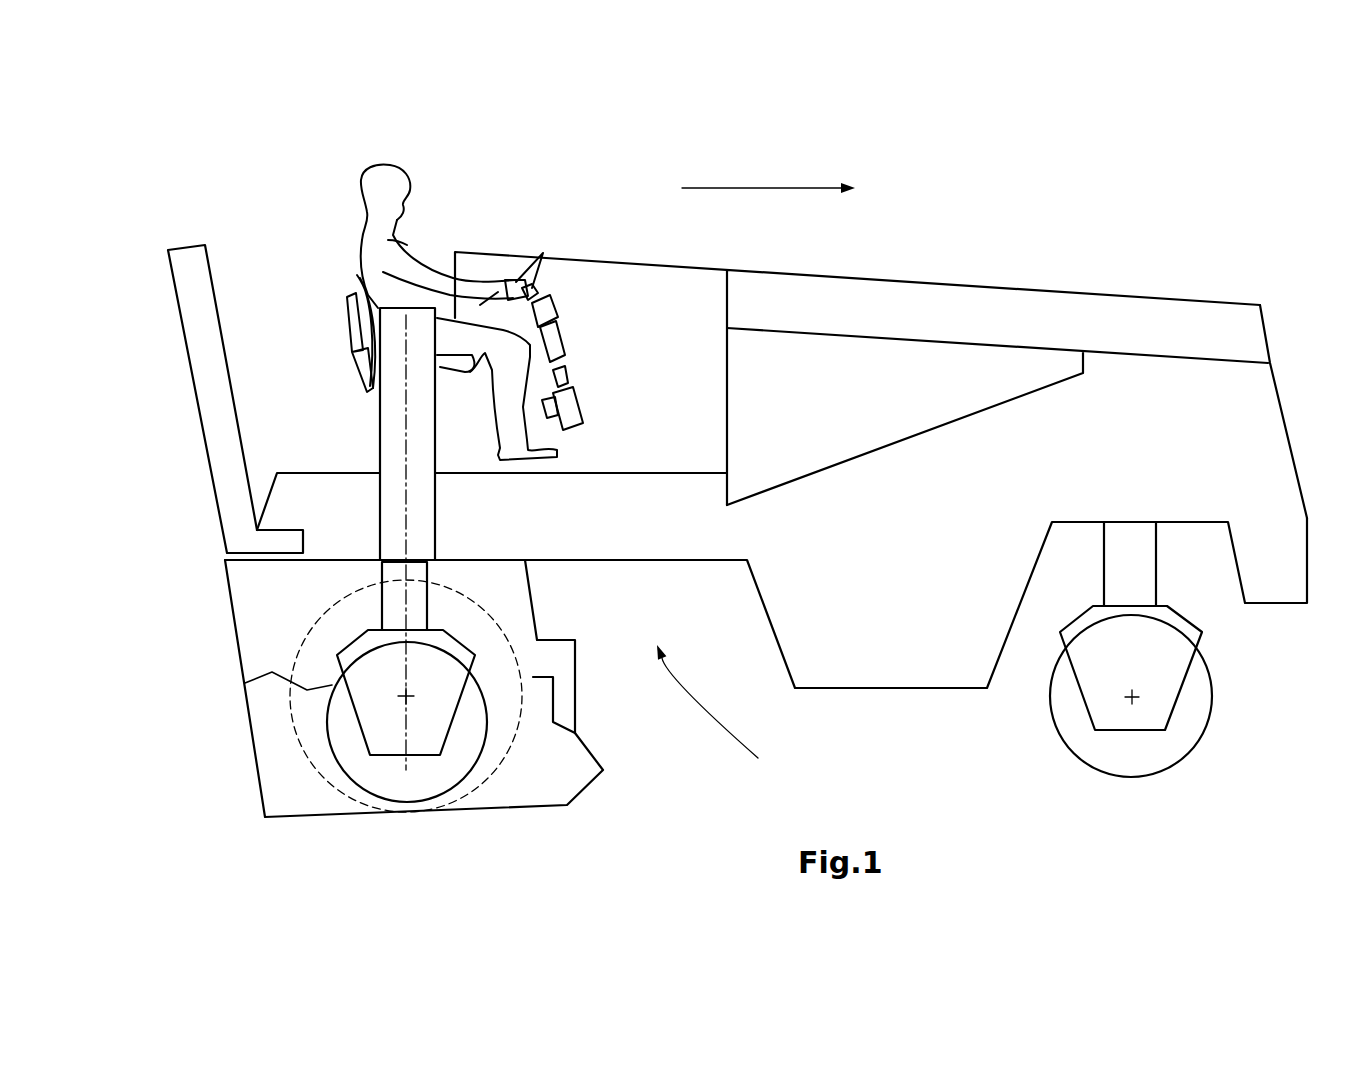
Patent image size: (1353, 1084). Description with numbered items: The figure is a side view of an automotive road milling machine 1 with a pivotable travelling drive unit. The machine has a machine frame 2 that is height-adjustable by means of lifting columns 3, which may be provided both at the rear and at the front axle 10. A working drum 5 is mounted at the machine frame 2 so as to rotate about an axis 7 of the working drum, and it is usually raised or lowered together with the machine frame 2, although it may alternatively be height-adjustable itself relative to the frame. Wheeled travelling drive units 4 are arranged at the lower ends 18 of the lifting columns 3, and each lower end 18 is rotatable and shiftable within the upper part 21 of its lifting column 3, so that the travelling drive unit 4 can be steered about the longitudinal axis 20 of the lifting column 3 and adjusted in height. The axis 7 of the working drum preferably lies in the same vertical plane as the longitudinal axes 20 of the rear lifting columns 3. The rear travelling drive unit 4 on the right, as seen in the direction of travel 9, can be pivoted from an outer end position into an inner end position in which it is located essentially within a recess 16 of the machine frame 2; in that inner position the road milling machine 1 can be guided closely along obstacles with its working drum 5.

The road milling machine 1 is at (290, 196).
The machine frame 2 is at (1177, 430).
The lifting column 3 is at (429, 450).
The travelling drive unit 4 is at (390, 778).
The working drum 5 is at (493, 772).
The axis of the working drum 7 is at (403, 690).
The direction of travel 9 is at (750, 187).
The front axle 10 is at (1135, 698).
The recess 16 is at (722, 714).
The lower end of the lifting column 18 is at (397, 603).
The longitudinal axis of the lifting column 20 is at (408, 353).
The upper part of the lifting column 21 is at (433, 507).